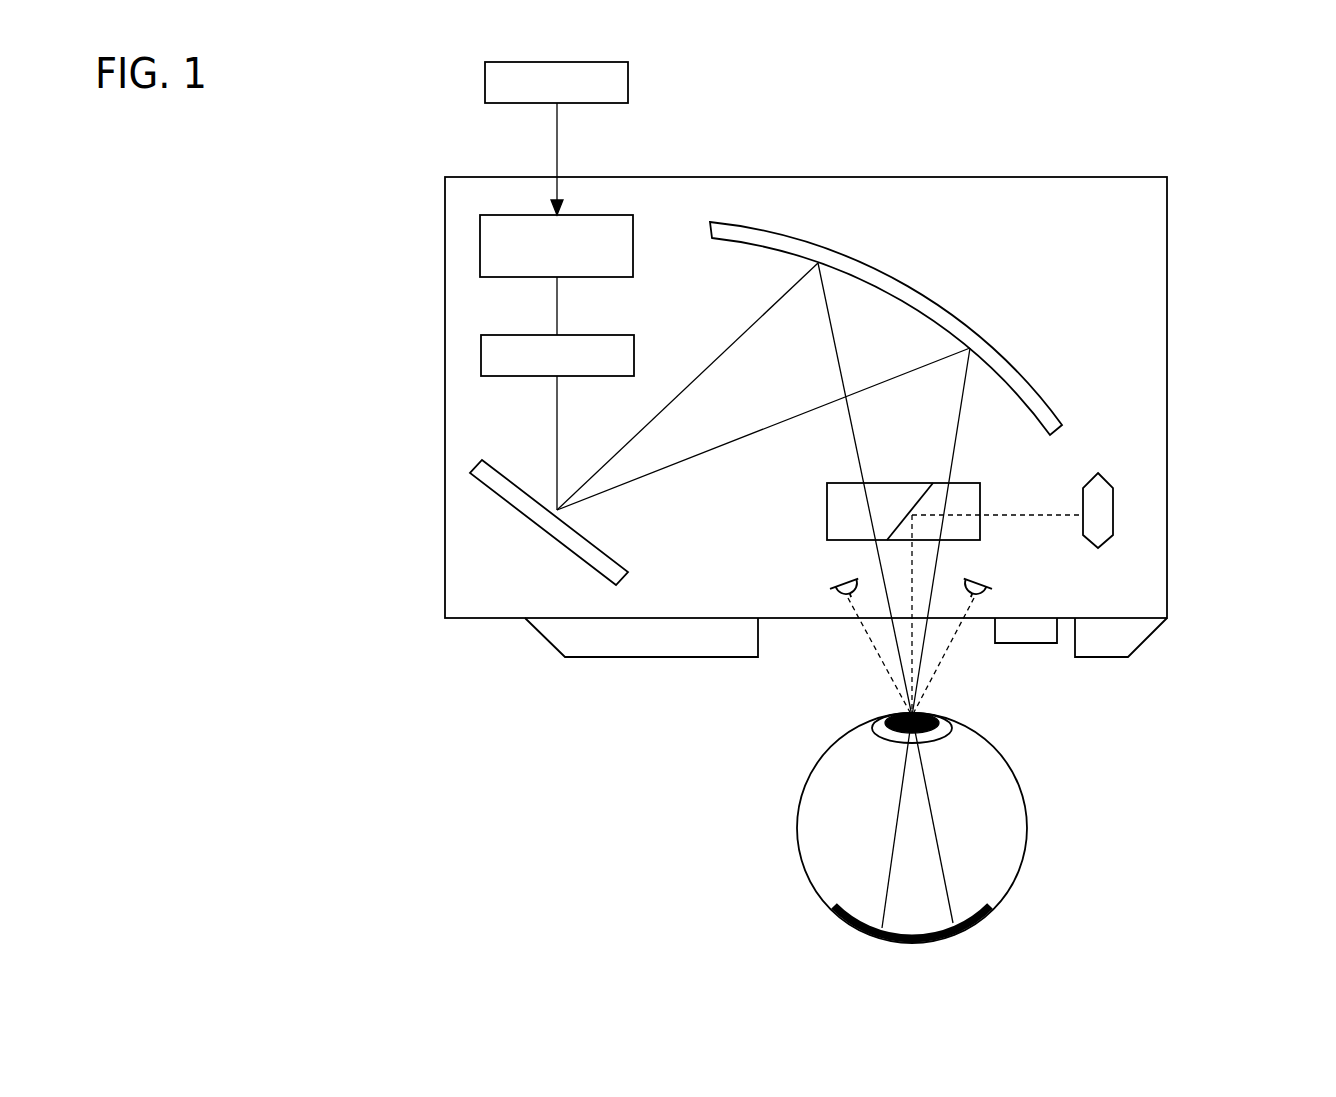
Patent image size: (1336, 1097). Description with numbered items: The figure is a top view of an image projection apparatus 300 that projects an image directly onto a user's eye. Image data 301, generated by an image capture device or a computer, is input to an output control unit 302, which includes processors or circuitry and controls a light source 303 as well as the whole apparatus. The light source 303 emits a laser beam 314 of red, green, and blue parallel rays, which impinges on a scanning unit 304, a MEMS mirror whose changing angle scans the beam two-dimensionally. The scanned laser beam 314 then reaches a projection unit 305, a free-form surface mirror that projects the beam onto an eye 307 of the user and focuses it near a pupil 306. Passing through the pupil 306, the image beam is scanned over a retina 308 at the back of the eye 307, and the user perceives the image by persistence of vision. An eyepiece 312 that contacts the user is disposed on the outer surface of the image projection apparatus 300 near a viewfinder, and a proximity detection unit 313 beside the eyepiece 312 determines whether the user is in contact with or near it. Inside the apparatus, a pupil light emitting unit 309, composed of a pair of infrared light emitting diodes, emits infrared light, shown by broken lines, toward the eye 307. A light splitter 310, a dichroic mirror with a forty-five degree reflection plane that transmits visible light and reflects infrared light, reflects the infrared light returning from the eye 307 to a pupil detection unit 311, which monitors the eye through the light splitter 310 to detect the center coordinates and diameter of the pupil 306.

The image projection apparatus 300 is at (1167, 203).
The image data 301 is at (485, 82).
The output control unit 302 is at (480, 240).
The light source 303 is at (481, 350).
The scanning unit 304 is at (478, 466).
The projection unit 305 is at (870, 263).
The pupil 306 is at (933, 713).
The eye 307 is at (1027, 840).
The retina 308 is at (990, 915).
The pupil light emitting unit 309 is at (968, 598).
The light splitter 310 is at (980, 483).
The pupil detection unit 311 is at (1115, 503).
The eyepiece 312 is at (580, 658).
The proximity detection unit 313 is at (1047, 647).
The laser beam 314 is at (932, 837).